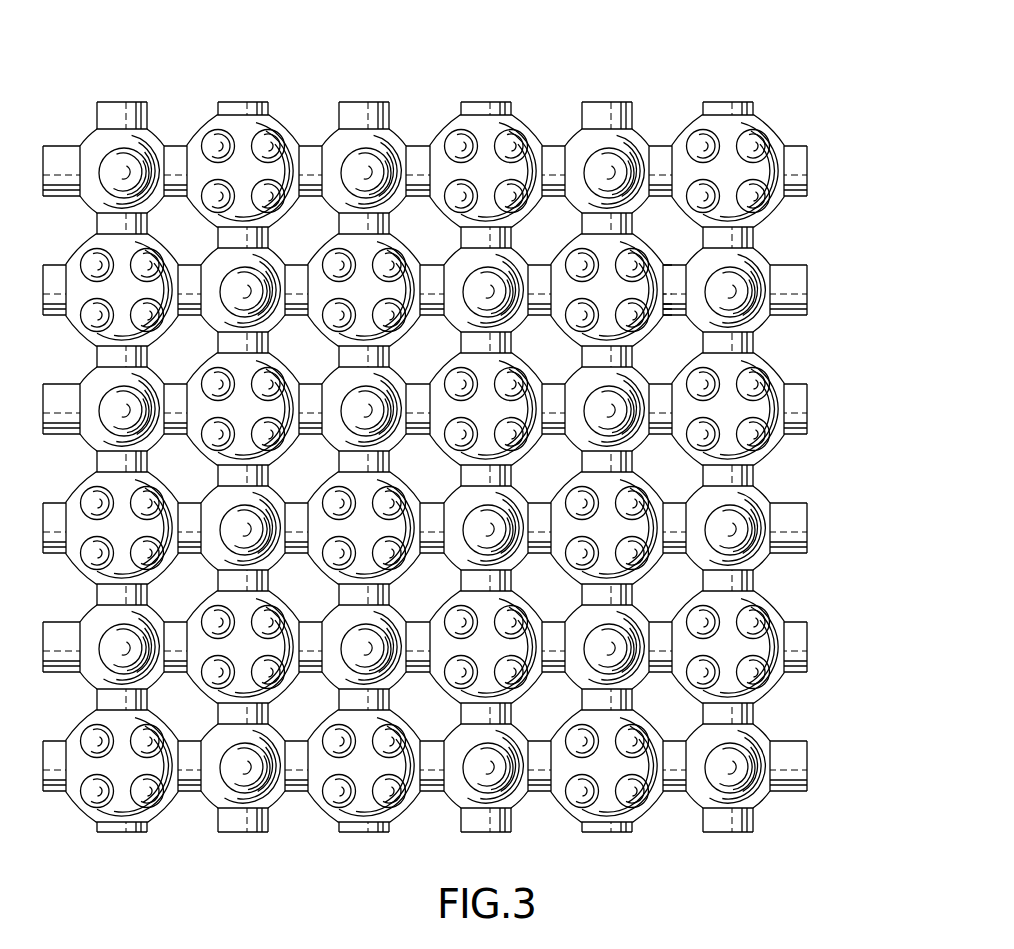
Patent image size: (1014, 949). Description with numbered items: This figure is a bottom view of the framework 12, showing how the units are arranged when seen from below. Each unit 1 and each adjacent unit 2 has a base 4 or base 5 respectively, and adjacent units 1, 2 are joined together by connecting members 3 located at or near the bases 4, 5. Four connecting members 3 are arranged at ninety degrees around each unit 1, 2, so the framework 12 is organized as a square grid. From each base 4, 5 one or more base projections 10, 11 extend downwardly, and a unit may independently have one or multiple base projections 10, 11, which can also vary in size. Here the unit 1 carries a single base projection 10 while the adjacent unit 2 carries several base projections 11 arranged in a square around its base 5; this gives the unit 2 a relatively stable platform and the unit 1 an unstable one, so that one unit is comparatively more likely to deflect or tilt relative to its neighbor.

The unit 1 is at (600, 110).
The unit 2 is at (761, 117).
The connecting member 3 is at (675, 285).
The base 4 is at (580, 148).
The base 5 is at (770, 165).
The base projection 10 is at (612, 167).
The base projection 11 is at (753, 140).
The framework 12 is at (857, 95).